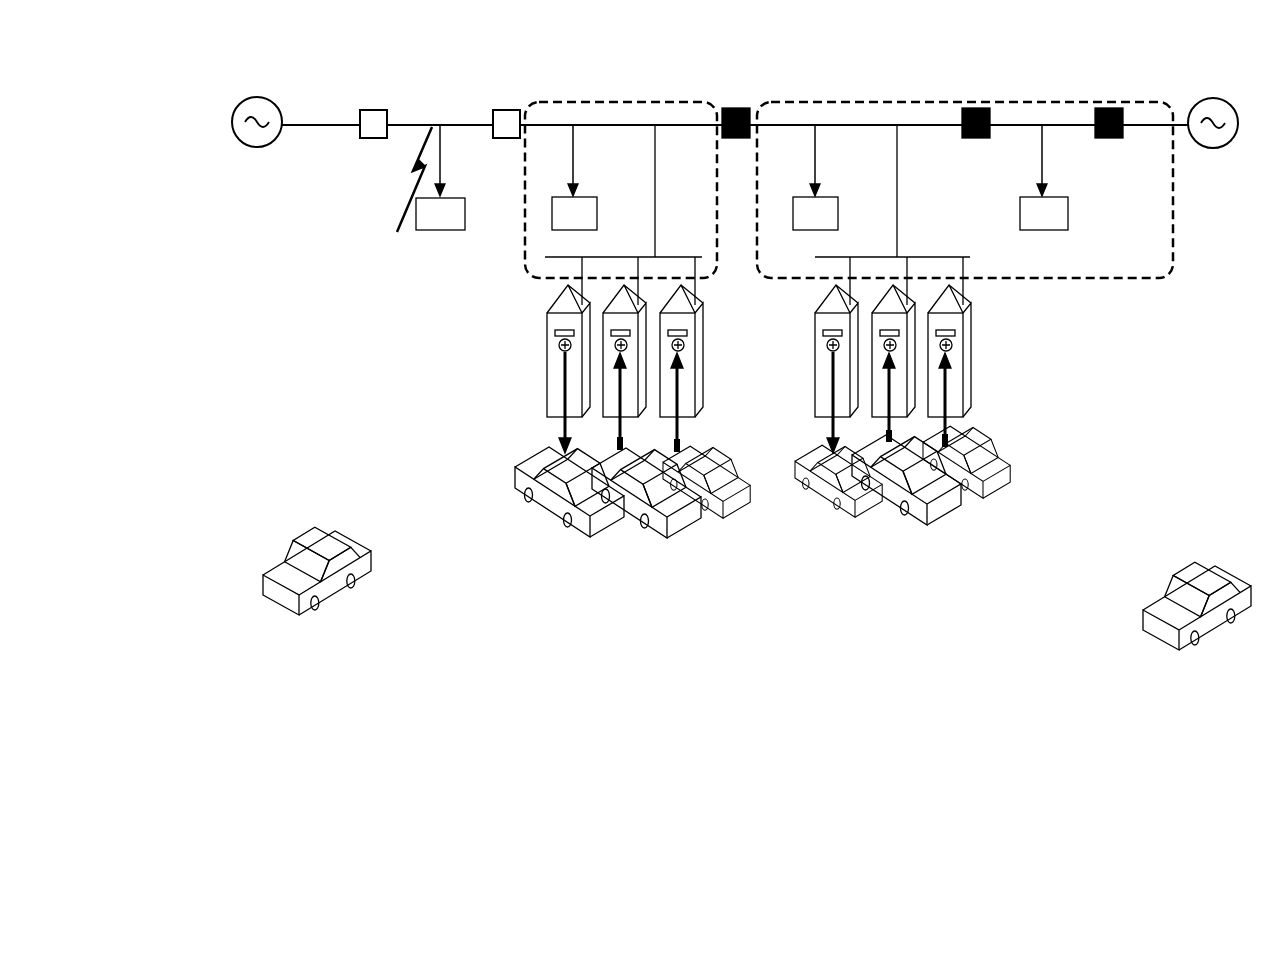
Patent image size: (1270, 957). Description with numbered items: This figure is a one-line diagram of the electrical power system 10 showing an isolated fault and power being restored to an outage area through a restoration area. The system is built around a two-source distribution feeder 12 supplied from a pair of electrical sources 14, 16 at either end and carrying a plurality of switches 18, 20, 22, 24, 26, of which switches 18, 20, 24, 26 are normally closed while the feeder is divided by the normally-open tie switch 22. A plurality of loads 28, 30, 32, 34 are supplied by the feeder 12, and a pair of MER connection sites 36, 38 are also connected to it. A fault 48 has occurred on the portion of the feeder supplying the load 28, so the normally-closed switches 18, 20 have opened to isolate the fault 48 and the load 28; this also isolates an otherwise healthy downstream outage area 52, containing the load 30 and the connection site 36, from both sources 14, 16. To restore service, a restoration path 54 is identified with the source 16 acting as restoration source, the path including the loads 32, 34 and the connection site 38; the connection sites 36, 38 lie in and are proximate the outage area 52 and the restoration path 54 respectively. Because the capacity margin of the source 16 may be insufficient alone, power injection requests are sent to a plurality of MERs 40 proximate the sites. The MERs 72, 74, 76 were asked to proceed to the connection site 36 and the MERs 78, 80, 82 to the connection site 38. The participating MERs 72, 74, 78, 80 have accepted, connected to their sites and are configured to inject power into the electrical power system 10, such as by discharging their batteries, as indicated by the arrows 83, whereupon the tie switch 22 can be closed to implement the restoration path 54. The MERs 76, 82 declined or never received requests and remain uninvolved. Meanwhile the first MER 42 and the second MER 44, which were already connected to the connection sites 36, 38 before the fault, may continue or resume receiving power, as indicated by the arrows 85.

The electrical power system 10 is at (213, 326).
The two-source distribution feeder 12 is at (267, 232).
The electrical source 14 is at (257, 148).
The electrical source 16 is at (1213, 148).
The normally-closed switch 18 is at (375, 139).
The normally-closed switch 20 is at (508, 139).
The normally-open tie switch 22 is at (735, 140).
The normally-closed switch 24 is at (976, 140).
The normally-closed switch 26 is at (693, 432).
The load 28 is at (441, 231).
The load 30 is at (598, 214).
The load 32 is at (839, 214).
The load 34 is at (1069, 215).
The MER connection site 36 is at (614, 369).
The MER connection site 38 is at (830, 368).
The mobile energy resource (MER) 40 is at (725, 558).
The first MER 42 is at (558, 514).
The second MER 44 is at (835, 495).
The fault 48 is at (393, 213).
The outage area 52 is at (604, 101).
The restoration path 54 is at (825, 101).
The MER 72 is at (703, 518).
The MER 74 is at (752, 496).
The MER 76 is at (285, 592).
The MER 78 is at (955, 497).
The MER 80 is at (1010, 480).
The MER 82 is at (1165, 635).
The arrows (power injection) 83 is at (680, 405).
The arrows (power reception) 85 is at (563, 370).